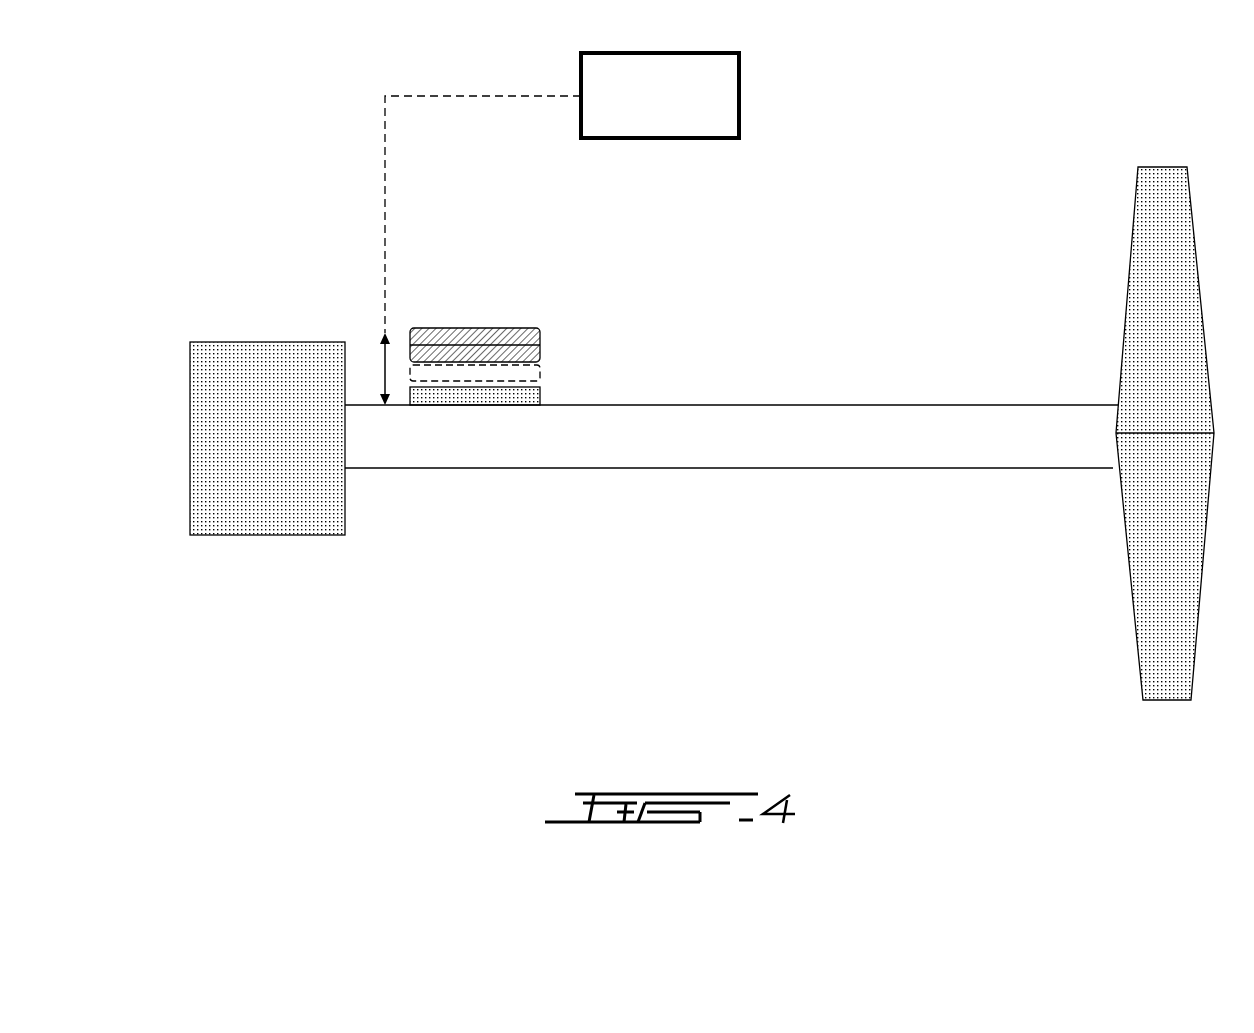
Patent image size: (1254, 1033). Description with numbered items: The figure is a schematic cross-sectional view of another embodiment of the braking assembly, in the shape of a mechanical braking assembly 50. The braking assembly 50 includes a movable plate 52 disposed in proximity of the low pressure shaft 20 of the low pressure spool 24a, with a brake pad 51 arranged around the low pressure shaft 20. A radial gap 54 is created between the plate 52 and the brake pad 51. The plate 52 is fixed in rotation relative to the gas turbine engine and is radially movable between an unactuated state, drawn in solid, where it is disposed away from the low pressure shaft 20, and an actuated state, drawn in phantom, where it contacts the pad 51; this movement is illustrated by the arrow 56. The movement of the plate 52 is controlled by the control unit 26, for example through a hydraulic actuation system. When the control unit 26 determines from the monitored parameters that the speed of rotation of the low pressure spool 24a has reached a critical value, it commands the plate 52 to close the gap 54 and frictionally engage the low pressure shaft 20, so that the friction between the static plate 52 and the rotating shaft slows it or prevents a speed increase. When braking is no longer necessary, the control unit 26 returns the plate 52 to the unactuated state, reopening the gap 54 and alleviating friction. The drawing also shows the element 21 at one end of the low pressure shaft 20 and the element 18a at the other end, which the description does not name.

The propeller blade 18a is at (1160, 607).
The low pressure shaft 20 is at (520, 468).
The motor / drive unit 21 is at (245, 342).
The low pressure spool 24a is at (836, 270).
The control unit 26 is at (739, 75).
The mechanical braking assembly 50 is at (700, 230).
The brake pad 51 is at (541, 397).
The movable plate 52 is at (493, 327).
The radial gap 54 is at (500, 378).
The arrow 56 is at (382, 358).